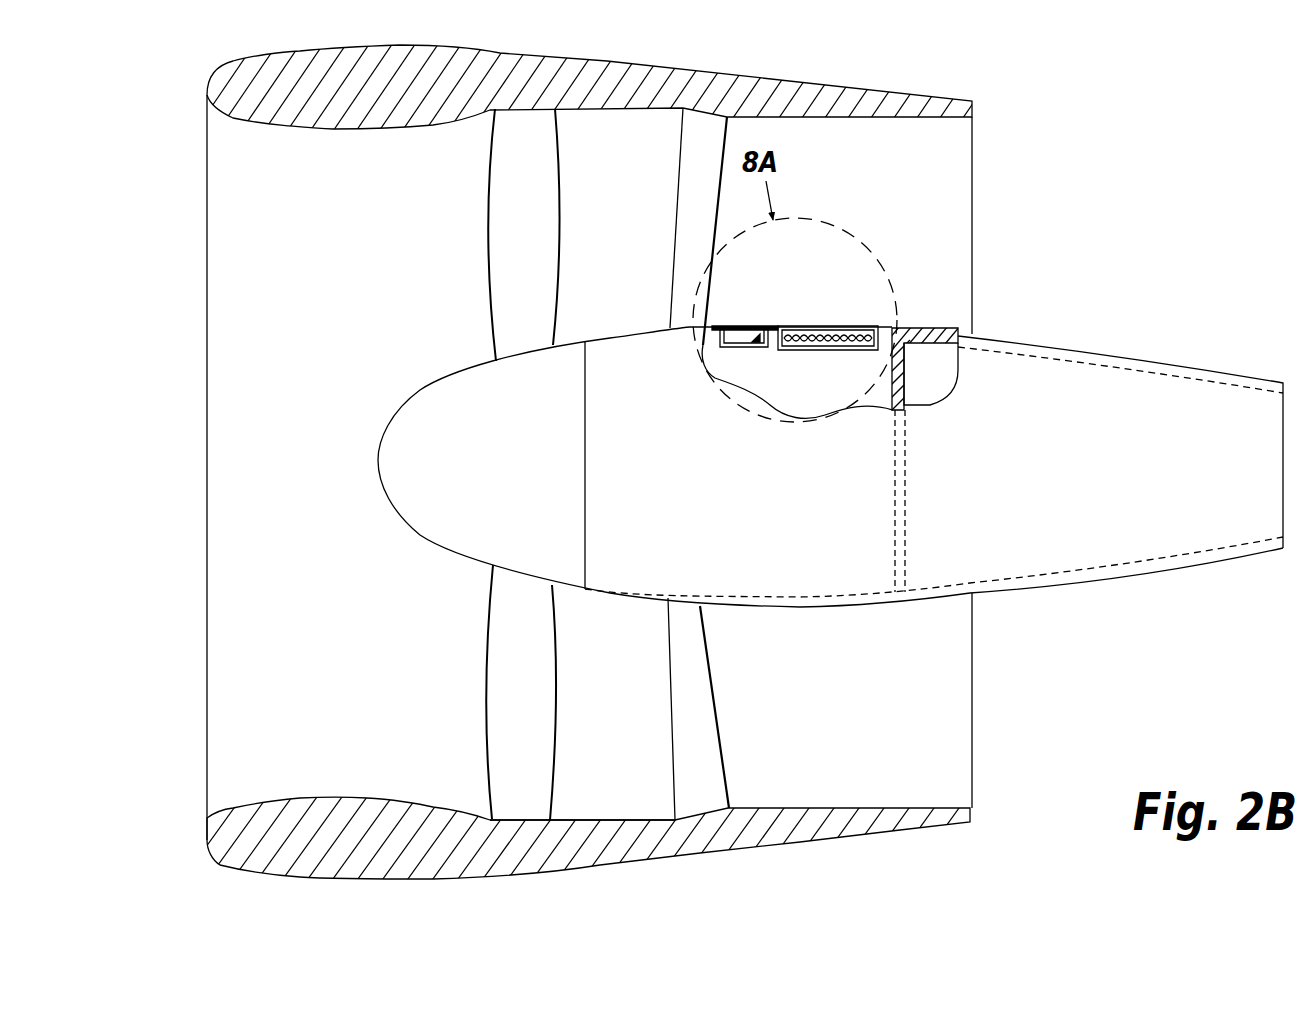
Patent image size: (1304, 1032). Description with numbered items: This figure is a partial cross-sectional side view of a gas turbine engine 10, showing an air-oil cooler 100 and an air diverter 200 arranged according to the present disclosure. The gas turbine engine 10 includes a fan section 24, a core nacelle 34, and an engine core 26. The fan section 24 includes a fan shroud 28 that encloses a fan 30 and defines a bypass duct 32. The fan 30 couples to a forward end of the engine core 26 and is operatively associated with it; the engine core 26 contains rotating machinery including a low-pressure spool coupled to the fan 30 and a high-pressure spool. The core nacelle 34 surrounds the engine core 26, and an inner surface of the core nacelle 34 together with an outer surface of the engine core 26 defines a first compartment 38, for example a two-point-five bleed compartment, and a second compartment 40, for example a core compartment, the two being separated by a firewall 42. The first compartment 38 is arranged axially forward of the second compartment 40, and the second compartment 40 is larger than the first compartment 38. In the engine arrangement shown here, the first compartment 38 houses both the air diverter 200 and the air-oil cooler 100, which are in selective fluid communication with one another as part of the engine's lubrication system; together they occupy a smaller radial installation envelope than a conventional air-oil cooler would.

The gas turbine engine 10 is at (1125, 157).
The fan section 24 is at (575, 869).
The engine core 26 is at (1150, 400).
The fan shroud 28 is at (612, 819).
The fan 30 is at (497, 725).
The bypass duct 32 is at (634, 210).
The core nacelle 34 is at (930, 330).
The first compartment 38 is at (815, 385).
The second compartment 40 is at (947, 383).
The firewall 42 is at (880, 398).
The air-oil cooler 100 is at (846, 325).
The air diverter 200 is at (739, 325).